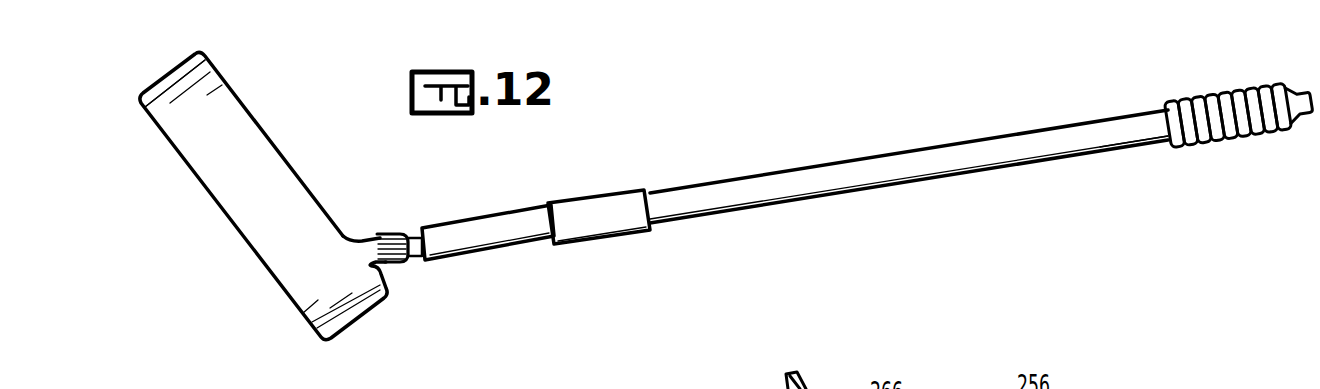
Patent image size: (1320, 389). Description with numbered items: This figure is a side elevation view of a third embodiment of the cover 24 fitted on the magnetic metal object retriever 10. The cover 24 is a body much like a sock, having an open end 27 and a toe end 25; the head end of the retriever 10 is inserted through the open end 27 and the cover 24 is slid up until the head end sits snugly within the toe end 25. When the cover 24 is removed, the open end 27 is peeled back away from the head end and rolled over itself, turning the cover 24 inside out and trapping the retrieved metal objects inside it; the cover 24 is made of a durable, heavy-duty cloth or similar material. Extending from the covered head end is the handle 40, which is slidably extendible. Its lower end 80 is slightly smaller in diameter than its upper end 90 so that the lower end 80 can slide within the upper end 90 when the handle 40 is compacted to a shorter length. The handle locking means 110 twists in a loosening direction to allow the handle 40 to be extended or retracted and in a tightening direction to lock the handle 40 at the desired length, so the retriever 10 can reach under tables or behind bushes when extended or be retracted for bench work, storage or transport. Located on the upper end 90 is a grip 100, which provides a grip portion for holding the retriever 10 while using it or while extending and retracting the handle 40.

The magnetic metal object retriever 10 is at (902, 99).
The cover 24 is at (268, 193).
The toe end 25 is at (198, 72).
The open end 27 is at (392, 248).
The handle 40 is at (834, 163).
The lower end 80 is at (516, 227).
The upper end 90 is at (1133, 142).
The grip 100 is at (1180, 101).
The handle locking means 110 is at (623, 205).